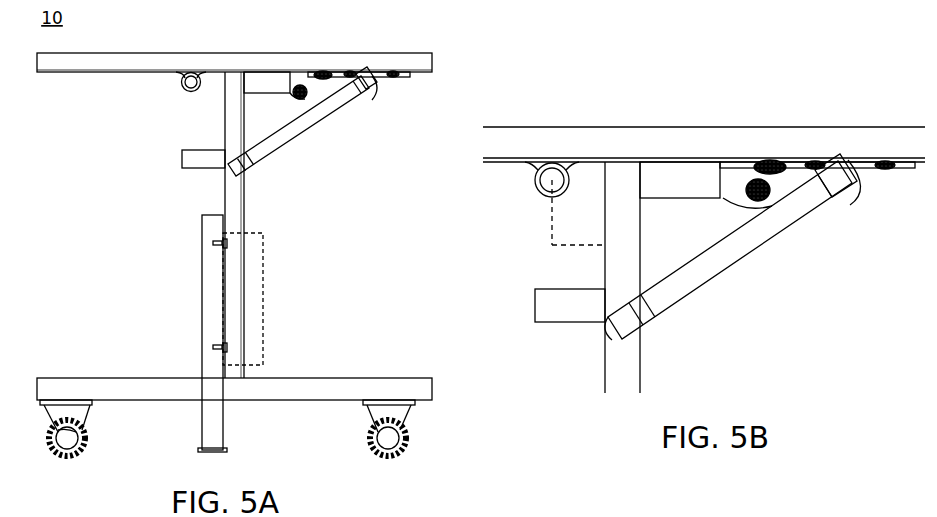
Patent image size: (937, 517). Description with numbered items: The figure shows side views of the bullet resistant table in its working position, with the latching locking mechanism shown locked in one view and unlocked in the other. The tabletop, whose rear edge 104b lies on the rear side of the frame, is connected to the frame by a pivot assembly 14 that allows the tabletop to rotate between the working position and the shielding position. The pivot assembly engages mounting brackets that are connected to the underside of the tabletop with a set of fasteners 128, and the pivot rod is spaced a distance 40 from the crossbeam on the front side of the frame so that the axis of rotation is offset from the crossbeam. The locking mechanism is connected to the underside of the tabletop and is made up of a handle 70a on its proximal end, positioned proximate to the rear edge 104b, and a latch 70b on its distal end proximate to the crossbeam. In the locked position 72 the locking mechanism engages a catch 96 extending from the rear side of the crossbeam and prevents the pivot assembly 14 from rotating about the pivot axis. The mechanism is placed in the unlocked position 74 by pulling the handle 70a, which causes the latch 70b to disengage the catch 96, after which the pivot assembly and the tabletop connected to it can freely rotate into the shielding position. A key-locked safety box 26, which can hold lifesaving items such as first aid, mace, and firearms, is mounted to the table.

In FIG. 5A, the pivot assembly 14 is at (165, 88).
In FIG. 5A, the key-locked safety box 26 is at (252, 293).
In FIG. 5B, the distance 40 is at (568, 248).
In FIG. 5A, the handle 70a is at (406, 77).
In FIG. 5A, the latch 70b is at (299, 99).
In FIG. 5A, the locked position 72 is at (273, 108).
In FIG. 5B, the unlocked position 74 is at (697, 210).
In FIG. 5A, the catch 96 is at (278, 86).
In FIG. 5A, the rear edge 104b is at (432, 55).
In FIG. 5A, the fasteners 128 is at (224, 347).